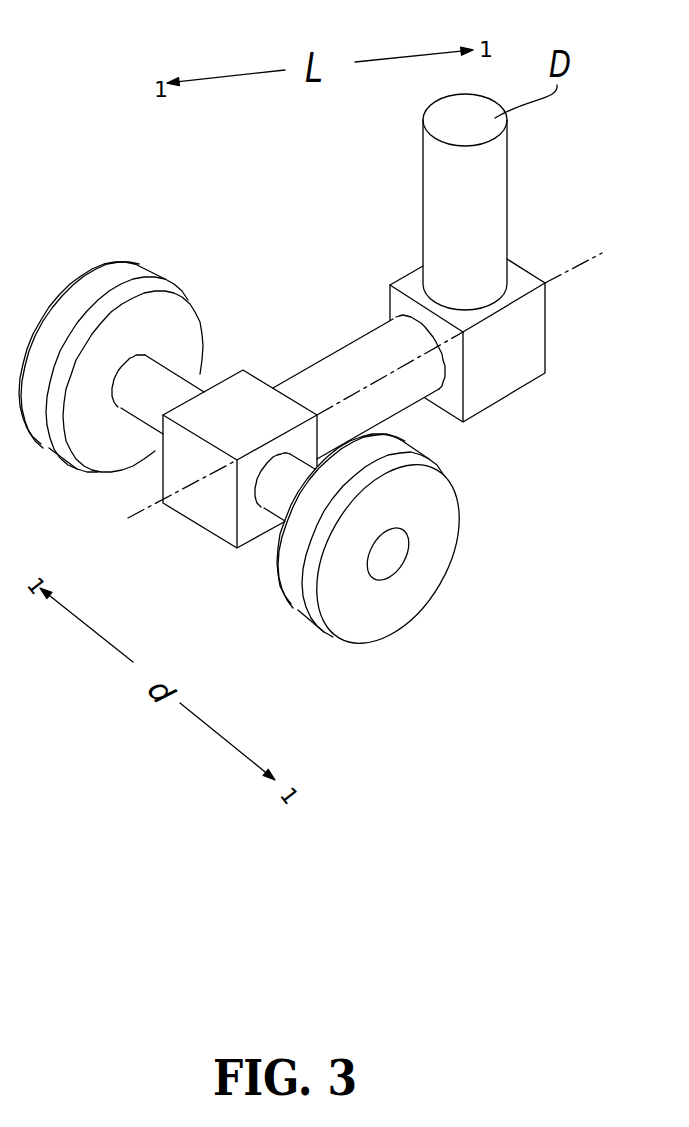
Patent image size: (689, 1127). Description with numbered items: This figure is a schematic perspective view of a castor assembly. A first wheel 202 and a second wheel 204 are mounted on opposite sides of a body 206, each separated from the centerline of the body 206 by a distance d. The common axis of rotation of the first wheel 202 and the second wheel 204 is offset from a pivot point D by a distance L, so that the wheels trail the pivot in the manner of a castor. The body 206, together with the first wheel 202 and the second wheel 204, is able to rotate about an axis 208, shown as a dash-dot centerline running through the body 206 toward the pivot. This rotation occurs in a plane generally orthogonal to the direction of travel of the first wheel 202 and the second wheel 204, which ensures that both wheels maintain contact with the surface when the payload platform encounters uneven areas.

The first wheel 202 is at (380, 617).
The second wheel 204 is at (88, 440).
The body 206 is at (205, 513).
The axis 208 is at (397, 392).